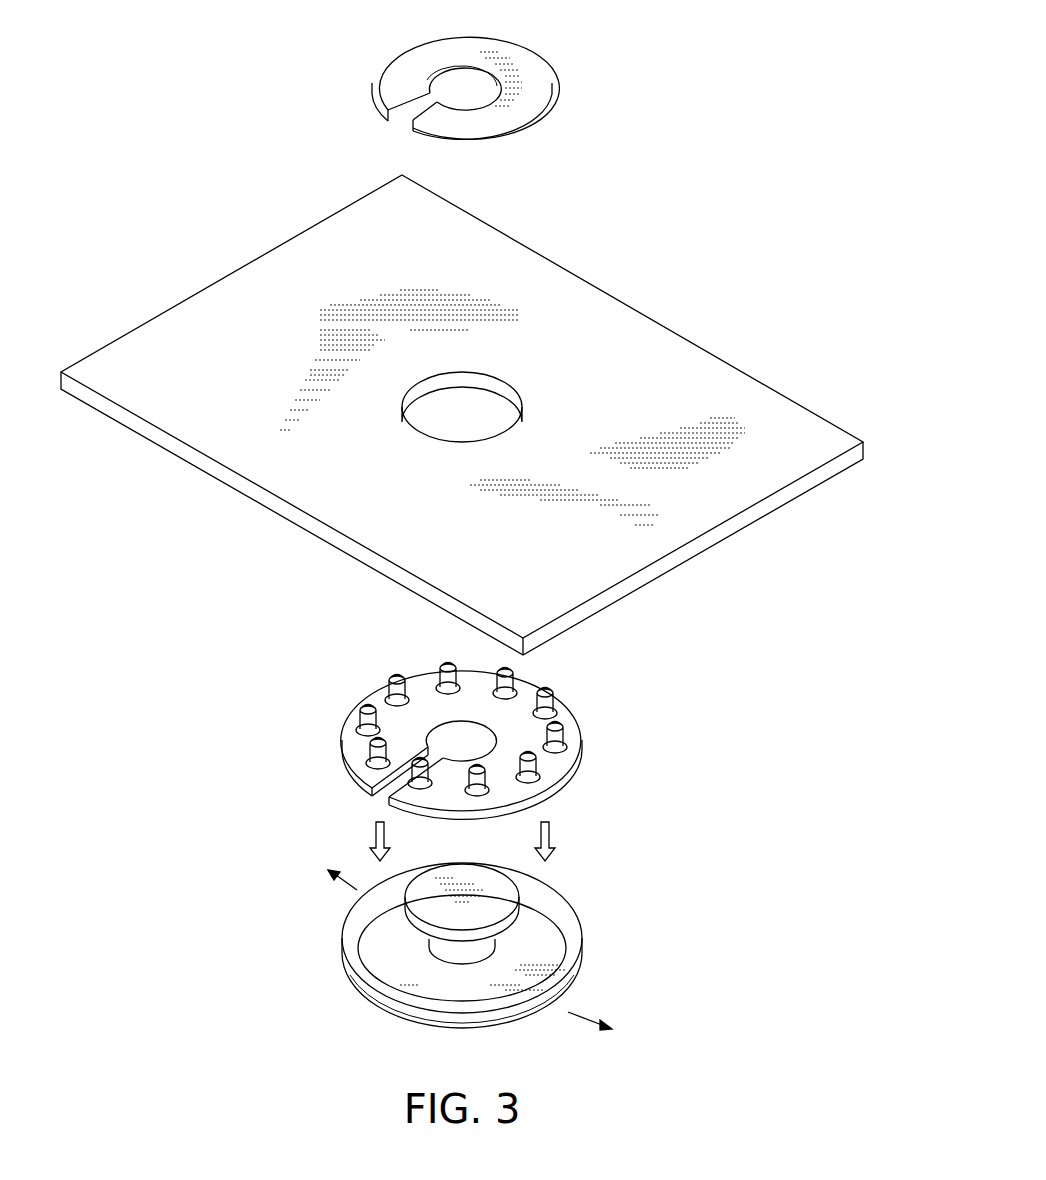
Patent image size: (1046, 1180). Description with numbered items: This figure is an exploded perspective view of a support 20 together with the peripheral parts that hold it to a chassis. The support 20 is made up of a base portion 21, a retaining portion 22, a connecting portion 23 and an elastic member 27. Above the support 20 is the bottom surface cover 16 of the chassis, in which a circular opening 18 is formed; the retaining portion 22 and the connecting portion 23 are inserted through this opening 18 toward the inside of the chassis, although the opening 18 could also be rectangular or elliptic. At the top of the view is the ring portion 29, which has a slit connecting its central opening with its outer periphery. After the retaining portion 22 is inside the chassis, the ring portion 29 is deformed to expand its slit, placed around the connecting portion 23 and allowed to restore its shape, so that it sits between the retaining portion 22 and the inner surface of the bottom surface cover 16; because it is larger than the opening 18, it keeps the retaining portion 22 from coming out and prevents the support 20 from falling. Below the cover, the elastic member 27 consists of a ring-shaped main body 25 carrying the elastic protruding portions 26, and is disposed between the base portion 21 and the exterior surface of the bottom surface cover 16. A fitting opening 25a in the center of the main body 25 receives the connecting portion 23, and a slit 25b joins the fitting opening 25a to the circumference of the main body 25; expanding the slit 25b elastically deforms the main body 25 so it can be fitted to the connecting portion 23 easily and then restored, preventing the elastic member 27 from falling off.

The bottom surface cover 16 is at (684, 362).
The opening 18 is at (513, 373).
The support 20 is at (505, 841).
The base portion 21 is at (533, 916).
The retaining portion 22 is at (487, 909).
The connecting portion 23 is at (540, 965).
The main body 25 is at (448, 740).
The fitting opening 25a is at (428, 730).
The slit 25b is at (373, 802).
The elastic protruding portions 26 is at (636, 652).
The elastic member 27 is at (470, 738).
The ring portion 29 is at (523, 65).